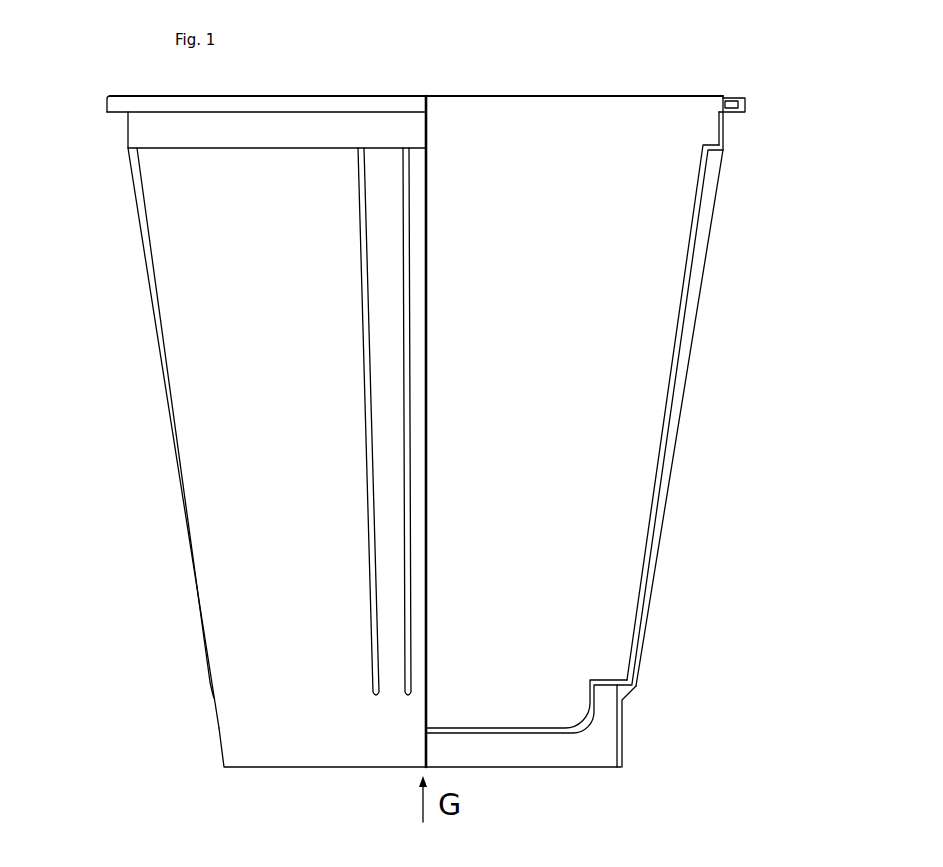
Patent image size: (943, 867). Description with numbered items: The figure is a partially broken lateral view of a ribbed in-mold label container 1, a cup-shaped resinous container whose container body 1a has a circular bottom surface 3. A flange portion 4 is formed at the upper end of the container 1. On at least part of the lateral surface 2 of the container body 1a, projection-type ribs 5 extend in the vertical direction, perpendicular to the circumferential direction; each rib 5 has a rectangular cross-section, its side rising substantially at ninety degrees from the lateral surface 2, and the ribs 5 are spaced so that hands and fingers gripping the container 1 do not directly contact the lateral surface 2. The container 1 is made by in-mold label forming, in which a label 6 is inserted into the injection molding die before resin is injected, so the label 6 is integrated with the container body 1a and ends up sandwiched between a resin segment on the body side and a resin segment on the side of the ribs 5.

The ribbed in-mold label container 1 is at (103, 132).
The container body 1a is at (217, 727).
The lateral surface 2 is at (215, 470).
The bottom surface 3 is at (540, 735).
The flange portion 4 is at (725, 95).
The rib 5 is at (145, 260).
The label 6 is at (673, 400).